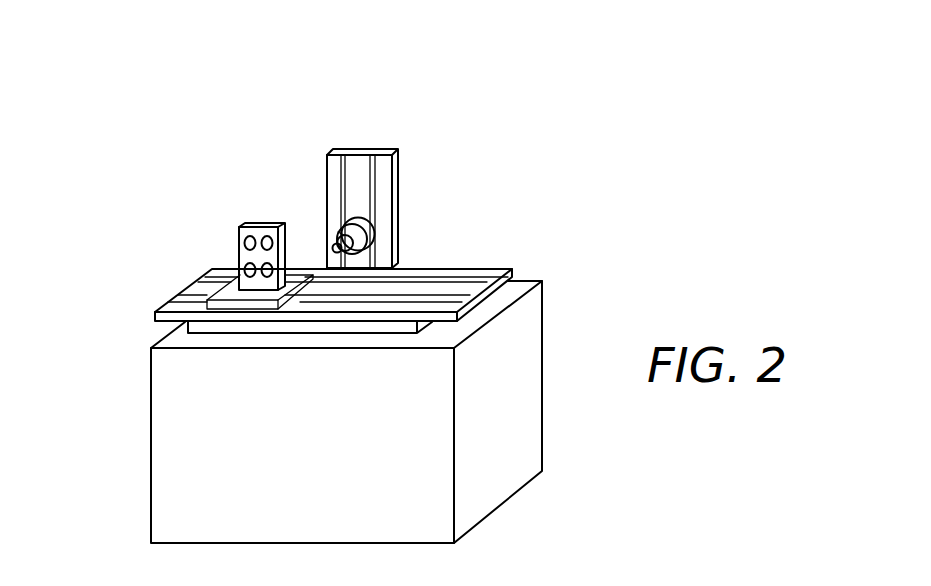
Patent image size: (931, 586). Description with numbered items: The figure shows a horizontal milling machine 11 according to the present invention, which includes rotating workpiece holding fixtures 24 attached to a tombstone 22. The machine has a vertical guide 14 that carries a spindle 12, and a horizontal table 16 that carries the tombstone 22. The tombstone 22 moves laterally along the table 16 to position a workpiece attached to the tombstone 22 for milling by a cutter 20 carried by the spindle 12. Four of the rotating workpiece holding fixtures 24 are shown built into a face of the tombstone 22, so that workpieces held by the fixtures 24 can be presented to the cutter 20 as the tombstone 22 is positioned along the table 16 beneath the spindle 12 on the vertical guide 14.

The horizontal milling machine 11 is at (296, 84).
The spindle 12 is at (373, 228).
The vertical guide 14 is at (383, 178).
The horizontal table 16 is at (198, 292).
The cutter 20 is at (373, 245).
The tombstone 22 is at (258, 233).
The rotating workpiece holding fixtures 24 is at (247, 242).